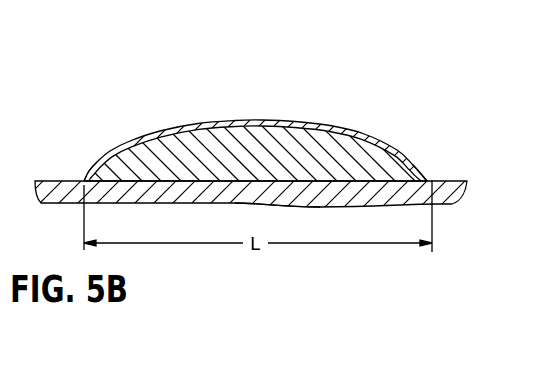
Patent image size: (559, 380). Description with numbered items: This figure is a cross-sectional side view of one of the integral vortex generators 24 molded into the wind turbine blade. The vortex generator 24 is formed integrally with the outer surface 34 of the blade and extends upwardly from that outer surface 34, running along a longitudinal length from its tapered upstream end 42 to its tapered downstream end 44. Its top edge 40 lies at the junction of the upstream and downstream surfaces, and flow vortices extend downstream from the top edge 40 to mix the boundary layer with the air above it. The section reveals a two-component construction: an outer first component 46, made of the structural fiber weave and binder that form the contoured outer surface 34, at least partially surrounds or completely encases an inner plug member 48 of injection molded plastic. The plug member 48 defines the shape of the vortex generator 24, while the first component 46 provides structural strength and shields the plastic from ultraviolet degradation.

The vortex generator 24 is at (348, 118).
The outer surface 34 is at (460, 180).
The top edge 40 is at (252, 119).
The upstream end 42 is at (85, 178).
The downstream end 44 is at (432, 180).
The first component 46 is at (348, 199).
The plug member 48 is at (205, 158).